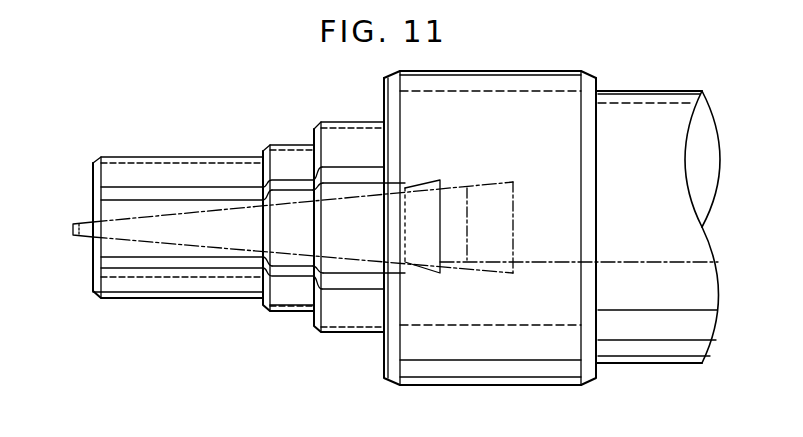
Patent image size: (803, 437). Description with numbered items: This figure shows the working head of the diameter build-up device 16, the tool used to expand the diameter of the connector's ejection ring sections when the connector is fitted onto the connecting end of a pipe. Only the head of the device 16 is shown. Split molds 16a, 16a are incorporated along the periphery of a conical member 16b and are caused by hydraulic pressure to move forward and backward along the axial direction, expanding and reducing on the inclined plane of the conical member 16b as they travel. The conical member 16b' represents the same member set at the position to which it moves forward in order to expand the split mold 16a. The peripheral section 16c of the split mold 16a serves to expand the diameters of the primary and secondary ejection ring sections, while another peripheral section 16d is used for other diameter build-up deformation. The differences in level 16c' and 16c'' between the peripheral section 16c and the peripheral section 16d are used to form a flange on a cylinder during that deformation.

The diameter build-up device 16 is at (92, 183).
The split molds 16a is at (113, 236).
The conical member 16b is at (405, 215).
The conical member in forward position 16b' is at (426, 209).
The peripheral section of the split mold 16c is at (177, 204).
The difference in level 16c' is at (278, 238).
The difference in level 16c'' is at (342, 235).
The peripheral section of the split mold 16d is at (384, 93).